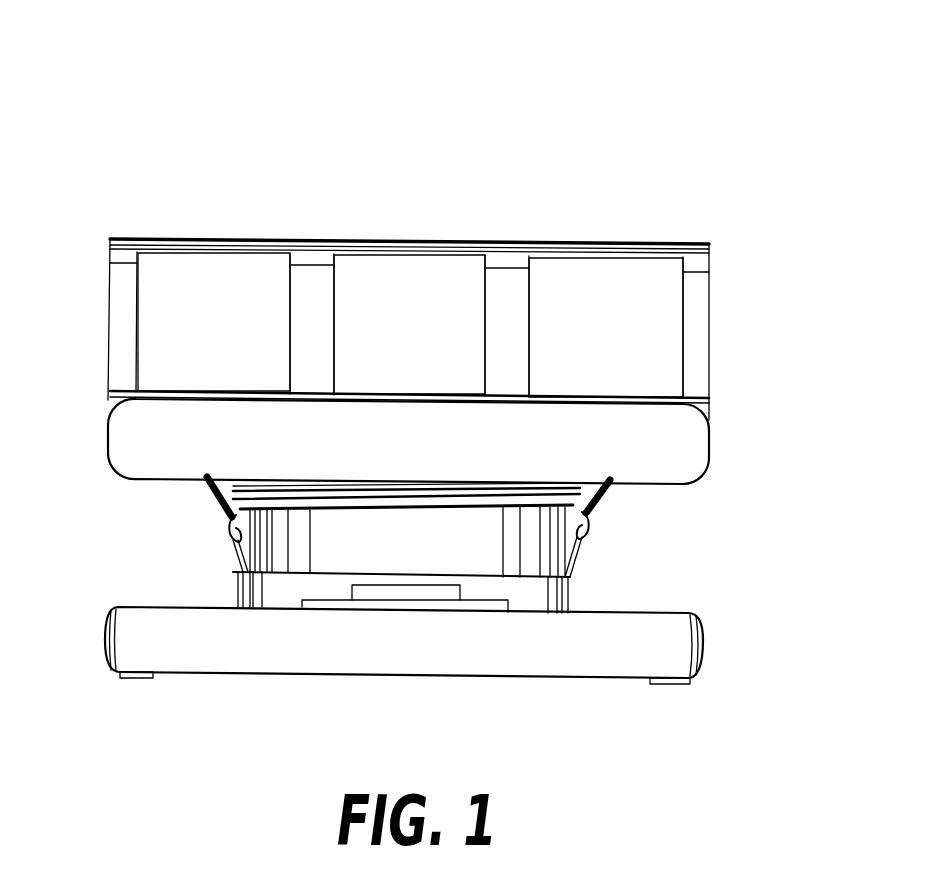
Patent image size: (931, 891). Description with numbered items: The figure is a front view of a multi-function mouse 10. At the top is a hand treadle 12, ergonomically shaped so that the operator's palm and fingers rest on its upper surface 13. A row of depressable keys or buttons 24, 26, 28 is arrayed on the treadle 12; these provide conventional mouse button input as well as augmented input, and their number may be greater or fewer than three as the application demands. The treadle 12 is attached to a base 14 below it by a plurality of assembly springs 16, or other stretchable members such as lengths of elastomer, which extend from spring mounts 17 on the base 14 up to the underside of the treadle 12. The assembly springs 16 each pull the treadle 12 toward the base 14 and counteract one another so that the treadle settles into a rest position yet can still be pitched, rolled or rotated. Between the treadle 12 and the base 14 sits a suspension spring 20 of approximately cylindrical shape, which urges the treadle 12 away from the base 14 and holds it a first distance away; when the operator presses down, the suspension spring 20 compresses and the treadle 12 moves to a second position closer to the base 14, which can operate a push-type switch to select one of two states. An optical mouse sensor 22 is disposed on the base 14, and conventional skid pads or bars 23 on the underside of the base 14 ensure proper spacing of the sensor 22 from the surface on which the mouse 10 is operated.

The mouse 10 is at (137, 70).
The hand treadle 12 is at (720, 397).
The upper surface 13 is at (690, 248).
The base 14 is at (714, 643).
The assembly springs 16 is at (207, 493).
The spring mounts 17 is at (232, 545).
The suspension spring 20 is at (353, 500).
The optical mouse sensor 22 is at (475, 592).
The skid pads or bars 23 is at (137, 679).
The depressable key/button 24 is at (611, 268).
The depressable key/button 26 is at (413, 266).
The depressable key/button 28 is at (210, 266).